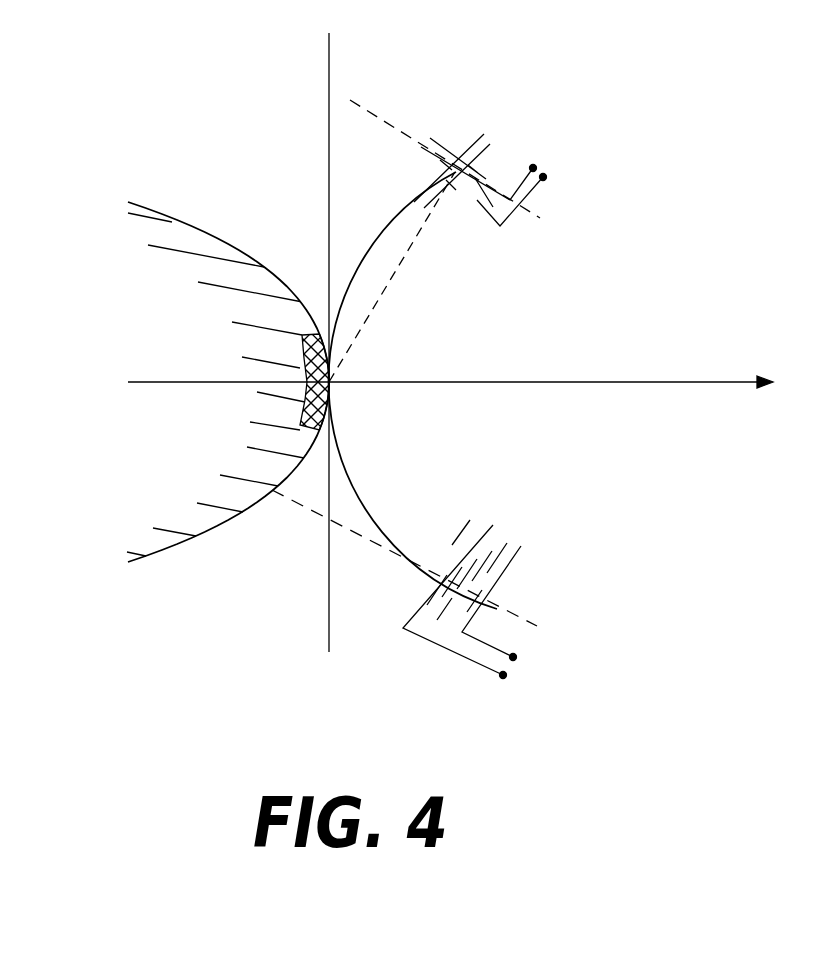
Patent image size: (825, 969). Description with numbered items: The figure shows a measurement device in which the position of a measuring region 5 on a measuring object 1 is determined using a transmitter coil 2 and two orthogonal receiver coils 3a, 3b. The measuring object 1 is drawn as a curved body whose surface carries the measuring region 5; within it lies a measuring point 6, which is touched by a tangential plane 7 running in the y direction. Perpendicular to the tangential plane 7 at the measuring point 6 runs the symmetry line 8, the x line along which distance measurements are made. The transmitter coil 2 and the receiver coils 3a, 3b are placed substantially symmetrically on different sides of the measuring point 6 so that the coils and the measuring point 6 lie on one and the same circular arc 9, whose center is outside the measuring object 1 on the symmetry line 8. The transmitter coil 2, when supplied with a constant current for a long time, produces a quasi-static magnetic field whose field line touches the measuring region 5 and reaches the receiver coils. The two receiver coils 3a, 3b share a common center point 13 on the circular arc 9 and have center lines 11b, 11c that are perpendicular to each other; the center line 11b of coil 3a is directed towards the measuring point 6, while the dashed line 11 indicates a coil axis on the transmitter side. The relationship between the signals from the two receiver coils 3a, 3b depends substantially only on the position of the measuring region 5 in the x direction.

The measuring object 1 is at (153, 228).
The transmitter coil 2 is at (492, 552).
The receiver coil 3a is at (434, 136).
The receiver coil 3b is at (441, 171).
The measuring region 5 is at (300, 371).
The measuring point 6 is at (331, 381).
The tangential plane 7 is at (331, 95).
The symmetry line 8 is at (727, 384).
The circular arc 9 is at (348, 480).
The light beam 11 is at (392, 551).
The center line 11b is at (385, 302).
The center line 11c is at (548, 222).
The common center point 13 is at (489, 156).